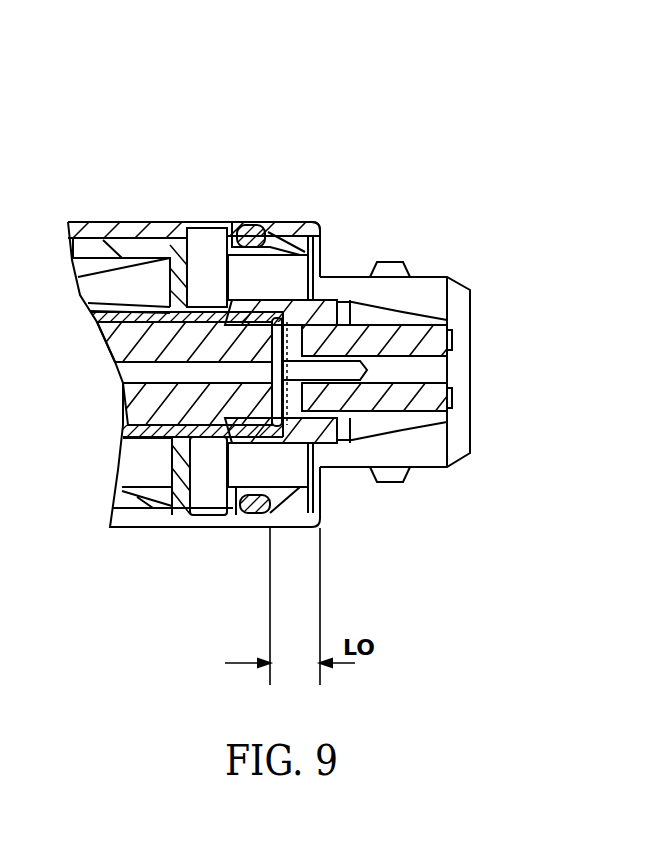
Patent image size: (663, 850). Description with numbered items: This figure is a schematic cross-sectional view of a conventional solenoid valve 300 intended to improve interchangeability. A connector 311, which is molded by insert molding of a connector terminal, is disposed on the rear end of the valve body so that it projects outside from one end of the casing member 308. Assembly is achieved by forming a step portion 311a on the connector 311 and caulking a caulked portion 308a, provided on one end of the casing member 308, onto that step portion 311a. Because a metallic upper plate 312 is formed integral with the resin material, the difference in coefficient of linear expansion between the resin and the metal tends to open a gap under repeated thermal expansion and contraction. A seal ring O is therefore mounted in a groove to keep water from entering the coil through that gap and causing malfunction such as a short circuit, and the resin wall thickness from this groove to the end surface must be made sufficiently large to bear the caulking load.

The solenoid valve 300 is at (236, 133).
The casing member 308 is at (112, 222).
The caulked portion 308a is at (320, 226).
The connector 311 is at (437, 277).
The step portion 311a is at (320, 262).
The upper plate 312 is at (203, 503).
The seal ring O is at (255, 503).